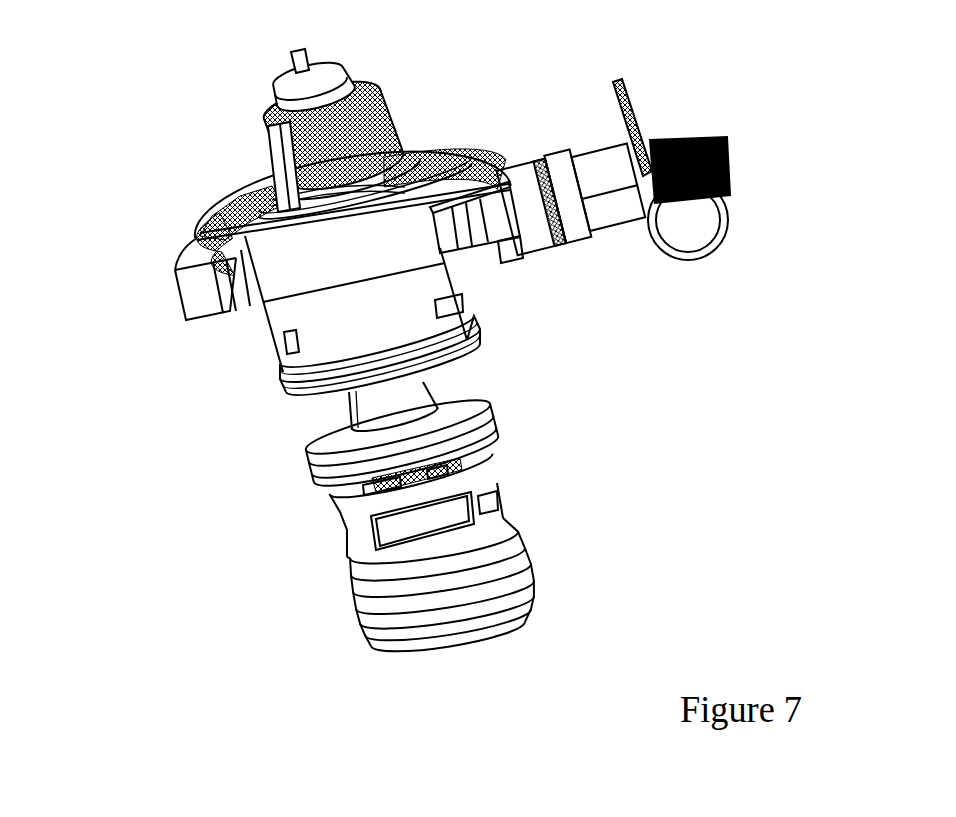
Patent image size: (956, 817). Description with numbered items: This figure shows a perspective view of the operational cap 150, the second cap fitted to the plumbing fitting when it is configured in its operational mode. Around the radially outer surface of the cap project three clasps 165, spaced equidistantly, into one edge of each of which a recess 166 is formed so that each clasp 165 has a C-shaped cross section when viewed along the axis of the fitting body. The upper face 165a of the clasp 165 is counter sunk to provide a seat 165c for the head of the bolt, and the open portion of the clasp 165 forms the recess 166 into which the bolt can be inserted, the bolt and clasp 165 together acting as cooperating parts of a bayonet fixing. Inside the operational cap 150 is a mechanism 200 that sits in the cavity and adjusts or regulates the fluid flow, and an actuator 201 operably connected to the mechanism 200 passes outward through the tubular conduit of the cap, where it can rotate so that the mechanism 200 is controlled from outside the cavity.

The operational cap 150 is at (445, 86).
The clasp 165 is at (190, 302).
The upper face of the clasp 165a is at (498, 202).
The seat 165c is at (497, 237).
The recess 166 is at (480, 250).
The mechanism 200 is at (327, 490).
The actuator 201 is at (288, 113).